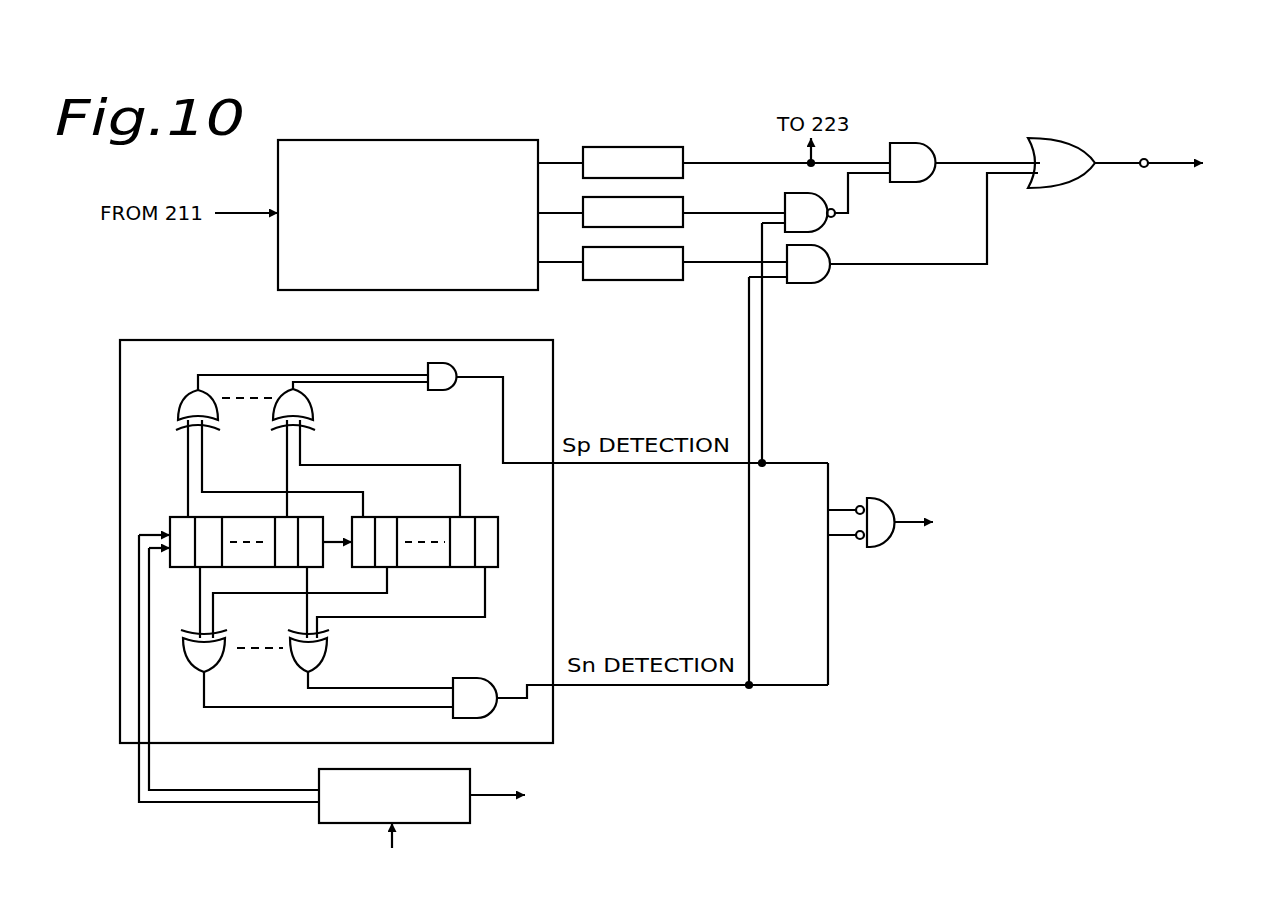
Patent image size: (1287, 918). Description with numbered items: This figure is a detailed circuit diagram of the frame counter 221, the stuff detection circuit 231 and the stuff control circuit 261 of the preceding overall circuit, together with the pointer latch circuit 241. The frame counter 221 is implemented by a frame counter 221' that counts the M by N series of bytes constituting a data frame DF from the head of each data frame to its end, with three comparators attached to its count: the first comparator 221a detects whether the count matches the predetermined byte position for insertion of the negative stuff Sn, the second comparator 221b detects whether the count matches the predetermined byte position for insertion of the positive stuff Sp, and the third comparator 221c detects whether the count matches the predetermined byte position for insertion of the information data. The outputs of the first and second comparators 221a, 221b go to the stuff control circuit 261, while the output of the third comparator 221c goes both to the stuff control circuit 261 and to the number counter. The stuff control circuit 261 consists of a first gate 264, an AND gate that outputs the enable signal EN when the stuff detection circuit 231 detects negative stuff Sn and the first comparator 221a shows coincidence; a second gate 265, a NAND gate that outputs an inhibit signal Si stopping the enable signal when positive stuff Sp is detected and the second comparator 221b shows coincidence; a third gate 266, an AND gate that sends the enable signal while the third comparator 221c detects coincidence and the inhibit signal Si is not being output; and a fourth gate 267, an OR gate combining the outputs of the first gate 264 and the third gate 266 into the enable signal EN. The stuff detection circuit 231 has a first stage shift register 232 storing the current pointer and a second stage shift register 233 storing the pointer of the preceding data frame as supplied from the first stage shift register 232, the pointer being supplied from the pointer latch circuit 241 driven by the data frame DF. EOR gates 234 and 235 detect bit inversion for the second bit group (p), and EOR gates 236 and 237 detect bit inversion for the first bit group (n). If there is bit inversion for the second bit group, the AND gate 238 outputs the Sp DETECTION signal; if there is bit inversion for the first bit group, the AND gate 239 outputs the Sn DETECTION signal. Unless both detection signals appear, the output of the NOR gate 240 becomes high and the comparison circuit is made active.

The frame counter 221 is at (516, 195).
The frame counter 221' is at (408, 195).
The first comparator 221a is at (672, 281).
The second comparator 221b is at (684, 224).
The third comparator 221c is at (626, 147).
The stuff control circuit 261 is at (893, 120).
The first gate 264 is at (822, 284).
The second gate 265 is at (826, 231).
The third gate 266 is at (915, 143).
The fourth gate 267 is at (1068, 188).
The stuff detection circuit 231 is at (440, 340).
The first stage shift register 232 is at (165, 533).
The second stage shift register 233 is at (498, 548).
The EOR gate 234 is at (218, 415).
The EOR gate 235 is at (312, 405).
The EOR gate 236 is at (225, 655).
The EOR gate 237 is at (327, 652).
The AND gate 238 is at (455, 370).
The AND gate 239 is at (495, 690).
The NOR gate 240 is at (880, 498).
The pointer latch circuit 241 is at (445, 823).